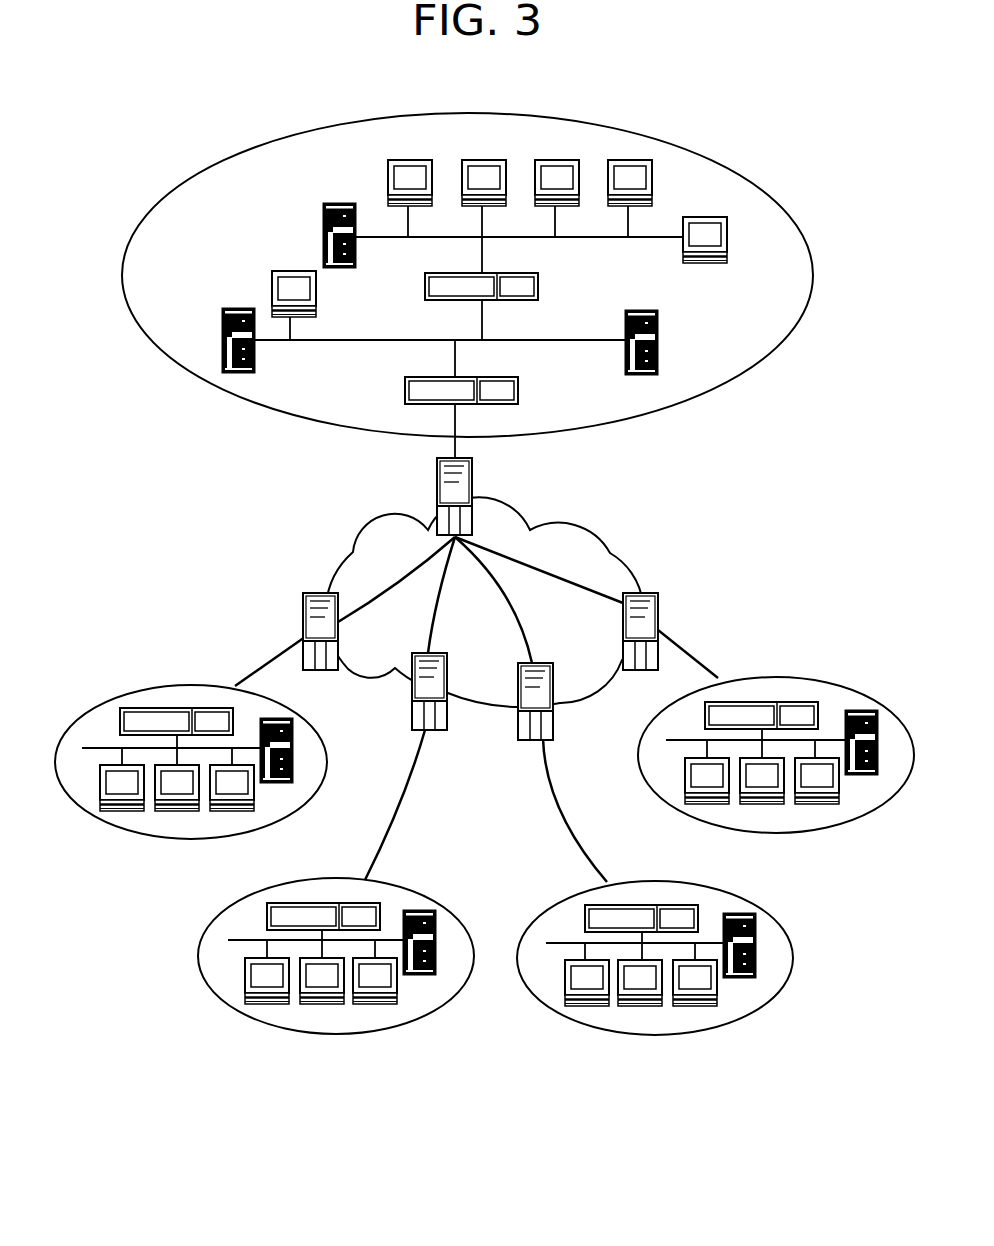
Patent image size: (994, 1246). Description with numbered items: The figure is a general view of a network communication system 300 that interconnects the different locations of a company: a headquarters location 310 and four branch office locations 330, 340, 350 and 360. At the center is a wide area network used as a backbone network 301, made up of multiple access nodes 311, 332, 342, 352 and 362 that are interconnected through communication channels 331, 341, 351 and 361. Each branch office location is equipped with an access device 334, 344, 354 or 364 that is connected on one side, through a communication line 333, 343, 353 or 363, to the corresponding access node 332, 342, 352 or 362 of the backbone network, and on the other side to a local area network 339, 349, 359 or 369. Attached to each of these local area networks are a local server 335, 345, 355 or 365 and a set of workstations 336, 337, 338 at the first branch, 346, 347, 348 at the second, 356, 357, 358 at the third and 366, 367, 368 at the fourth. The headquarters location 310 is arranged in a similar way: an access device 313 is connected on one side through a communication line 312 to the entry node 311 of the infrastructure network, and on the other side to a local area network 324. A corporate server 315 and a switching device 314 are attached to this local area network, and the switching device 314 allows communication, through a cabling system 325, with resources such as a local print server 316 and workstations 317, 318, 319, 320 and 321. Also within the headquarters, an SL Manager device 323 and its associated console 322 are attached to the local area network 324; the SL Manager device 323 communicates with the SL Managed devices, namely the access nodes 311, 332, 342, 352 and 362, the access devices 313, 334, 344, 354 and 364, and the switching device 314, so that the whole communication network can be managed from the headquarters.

The network communication system 300 is at (491, 96).
The backbone network 301 is at (598, 546).
The headquarters location 310 is at (140, 223).
The access node 311 is at (475, 488).
The communication line 312 is at (443, 446).
The access device 313 is at (405, 395).
The switching device 314 is at (560, 280).
The corporate server 315 is at (658, 327).
The local print server 316 is at (323, 225).
The workstation 317 is at (391, 172).
The workstation 318 is at (462, 175).
The workstation 319 is at (535, 175).
The workstation 320 is at (608, 175).
The workstation 321 is at (727, 226).
The console 322 is at (272, 277).
The SL Manager device 323 is at (222, 335).
The local area network 324 is at (553, 340).
The cabling system 325 is at (640, 237).
The branch office location 330 is at (193, 838).
The communication channel 331 is at (383, 605).
The access node 332 is at (303, 627).
The communication line 333 is at (268, 660).
The access device 334 is at (155, 708).
The local server 335 is at (278, 783).
The workstation 336 is at (247, 809).
The workstation 337 is at (192, 809).
The workstation 338 is at (100, 795).
The local area network 339 is at (88, 740).
The branch office location 340 is at (350, 1033).
The communication channel 341 is at (423, 615).
The access node 342 is at (447, 712).
The communication line 343 is at (388, 828).
The access device 344 is at (298, 903).
The local server 345 is at (423, 975).
The workstation 346 is at (392, 1004).
The workstation 347 is at (337, 1004).
The workstation 348 is at (245, 987).
The local area network 349 is at (233, 935).
The branch office location 350 is at (638, 1035).
The communication channel 351 is at (512, 598).
The access node 352 is at (555, 715).
The communication line 353 is at (585, 845).
The access device 354 is at (618, 905).
The local server 355 is at (743, 978).
The workstation 356 is at (712, 1006).
The workstation 357 is at (657, 1006).
The workstation 358 is at (565, 988).
The local area network 359 is at (546, 943).
The branch office location 360 is at (772, 833).
The communication channel 361 is at (598, 573).
The access node 362 is at (658, 610).
The communication line 363 is at (700, 660).
The access device 364 is at (738, 702).
The local server 365 is at (865, 775).
The workstation 366 is at (833, 804).
The workstation 367 is at (777, 804).
The workstation 368 is at (685, 787).
The local area network 369 is at (666, 740).